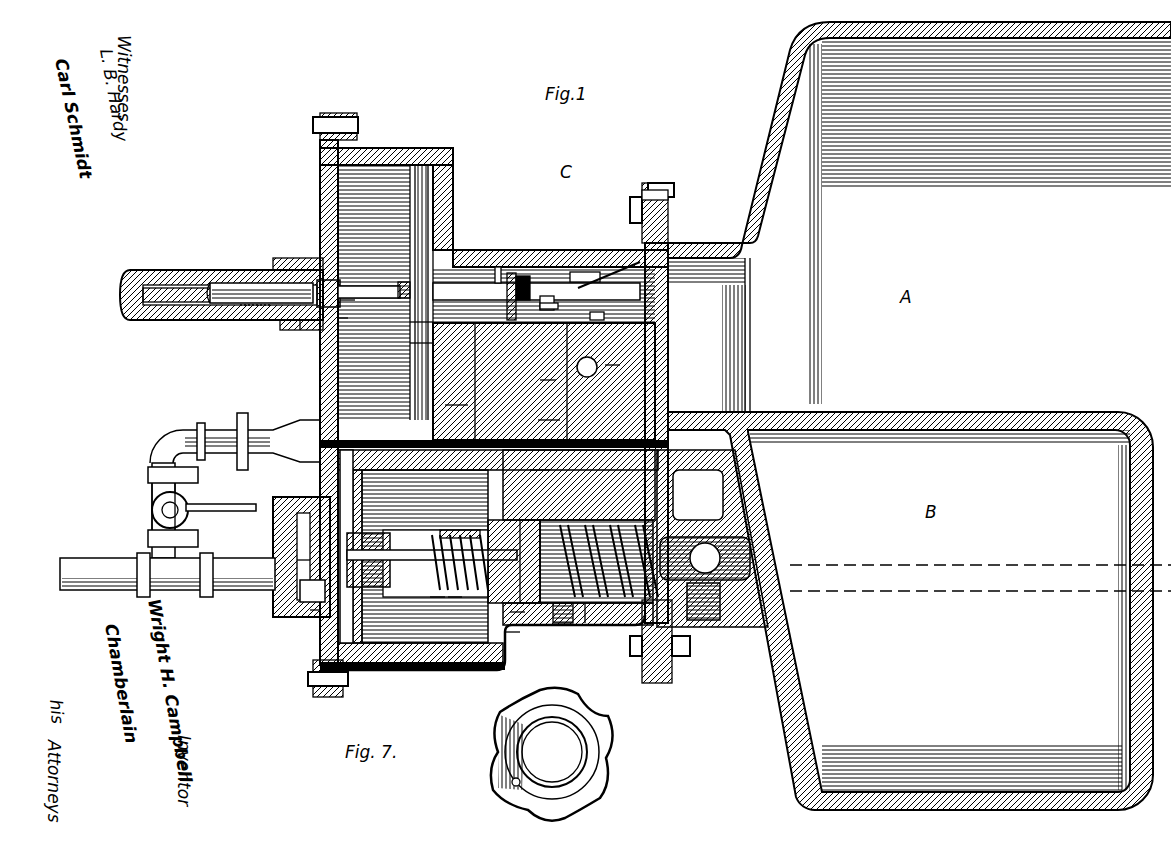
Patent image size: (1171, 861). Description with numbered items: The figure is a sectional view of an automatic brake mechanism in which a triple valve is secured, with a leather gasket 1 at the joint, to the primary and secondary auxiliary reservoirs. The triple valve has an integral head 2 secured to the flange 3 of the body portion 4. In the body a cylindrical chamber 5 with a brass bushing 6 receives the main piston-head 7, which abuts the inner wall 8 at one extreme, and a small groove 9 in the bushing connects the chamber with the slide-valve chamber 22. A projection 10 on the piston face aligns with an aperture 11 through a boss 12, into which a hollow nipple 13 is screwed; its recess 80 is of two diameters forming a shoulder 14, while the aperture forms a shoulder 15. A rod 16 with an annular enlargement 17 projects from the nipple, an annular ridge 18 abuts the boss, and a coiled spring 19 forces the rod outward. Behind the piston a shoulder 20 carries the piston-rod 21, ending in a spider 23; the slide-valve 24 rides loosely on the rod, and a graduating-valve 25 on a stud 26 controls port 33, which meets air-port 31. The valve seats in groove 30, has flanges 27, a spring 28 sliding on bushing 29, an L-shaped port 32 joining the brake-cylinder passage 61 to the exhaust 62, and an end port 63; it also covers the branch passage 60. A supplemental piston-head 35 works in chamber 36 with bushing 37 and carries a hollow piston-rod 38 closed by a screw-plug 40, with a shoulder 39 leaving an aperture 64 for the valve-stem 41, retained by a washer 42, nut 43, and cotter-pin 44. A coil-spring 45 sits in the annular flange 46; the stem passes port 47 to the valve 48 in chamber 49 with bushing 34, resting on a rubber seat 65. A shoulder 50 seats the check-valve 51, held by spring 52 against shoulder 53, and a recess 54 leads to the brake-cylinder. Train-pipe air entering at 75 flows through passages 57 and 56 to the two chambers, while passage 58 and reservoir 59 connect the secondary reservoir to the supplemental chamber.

In FIG. 1, the leather gasket 1 is at (655, 187).
In FIG. 1, the head 2 is at (320, 185).
In FIG. 1, the flange 3 is at (670, 238).
In FIG. 1, the body portion 4 is at (440, 655).
In FIG. 1, the cylindrical chamber 5 is at (410, 343).
In FIG. 1, the bushing 6 is at (388, 162).
In FIG. 1, the main piston-head 7 is at (415, 326).
In FIG. 1, the inner wall 8 is at (425, 367).
In FIG. 1, the small groove 9 is at (455, 152).
In FIG. 1, the projection 10 is at (398, 290).
In FIG. 1, the aperture 11 is at (345, 300).
In FIG. 1, the boss 12 is at (307, 328).
In FIG. 1, the hollow nipple 13 is at (172, 316).
In FIG. 1, the shoulder 14 is at (241, 283).
In FIG. 1, the shoulder 15 is at (340, 318).
In FIG. 1, the rod 16 is at (222, 284).
In FIG. 1, the annular enlargement 17 is at (340, 283).
In FIG. 1, the annular ridge 18 is at (290, 260).
In FIG. 1, the coiled spring 19 is at (249, 320).
In FIG. 1, the shoulder 20 is at (524, 276).
In FIG. 1, the piston-rod 21 is at (580, 272).
In FIG. 1, the slide-valve chamber 22 is at (548, 296).
In FIG. 1, the spider 23 is at (668, 305).
In FIG. 1, the slide-valve 24 is at (613, 357).
In FIG. 1, the graduating-valve 25 is at (548, 345).
In FIG. 1, the stud 26 is at (533, 338).
In FIG. 1, the flanges 27 is at (548, 295).
In FIG. 1, the spring 28 is at (598, 272).
In FIG. 1, the bushing 29 is at (500, 265).
In FIG. 1, the groove 30 is at (452, 318).
In FIG. 1, the air-port 31 is at (583, 338).
In FIG. 1, the L-shaped groove or port 32 is at (548, 372).
In FIG. 1, the port 33 is at (598, 313).
In FIG. 1, the bushing 34 is at (500, 585).
In FIG. 1, the supplemental piston-head 35 is at (380, 630).
In FIG. 1, the chamber 36 is at (425, 556).
In FIG. 1, the bushing 37 is at (440, 610).
In FIG. 1, the hollow piston-rod 38 is at (215, 507).
In FIG. 1, the shoulder 39 is at (400, 545).
In FIG. 1, the screw-plug 40 is at (300, 547).
In FIG. 1, the valve-stem 41 is at (300, 575).
In FIG. 1, the washer 42 is at (400, 578).
In FIG. 1, the nut 43 is at (369, 573).
In FIG. 1, the cotter-pin 44 is at (318, 612).
In FIG. 1, the coil-spring 45 is at (437, 605).
In FIG. 1, the annular flange 46 is at (455, 607).
In FIG. 1, the port 47 is at (505, 635).
In FIG. 1, the valve 48 is at (535, 608).
In FIG. 1, the chamber 49 is at (548, 525).
In FIG. 1, the shoulder 50 is at (590, 520).
In FIG. 1, the check-valve 51 is at (560, 620).
In FIG. 7, the check-valve 51 is at (598, 724).
In FIG. 1, the spring 52 is at (592, 608).
In FIG. 7, the spring 52 is at (513, 766).
In FIG. 1, the shoulder 53 is at (682, 520).
In FIG. 1, the recess 54 is at (690, 562).
In FIG. 1, the passage 56 is at (447, 447).
In FIG. 1, the passage 57 is at (325, 424).
In FIG. 1, the passage 58 is at (540, 462).
In FIG. 1, the reservoir 59 is at (312, 591).
In FIG. 1, the branch passage 60 is at (456, 398).
In FIG. 1, the brake-cylinder passage 61 is at (548, 413).
In FIG. 1, the exhaust 62 is at (587, 377).
In FIG. 1, the port 63 is at (623, 338).
In FIG. 1, the aperture 64 is at (447, 530).
In FIG. 1, the rubber seat 65 is at (515, 612).
In FIG. 1, the point of entrance of the train-pipe air 75 is at (245, 470).
In FIG. 1, the recess 80 is at (180, 295).